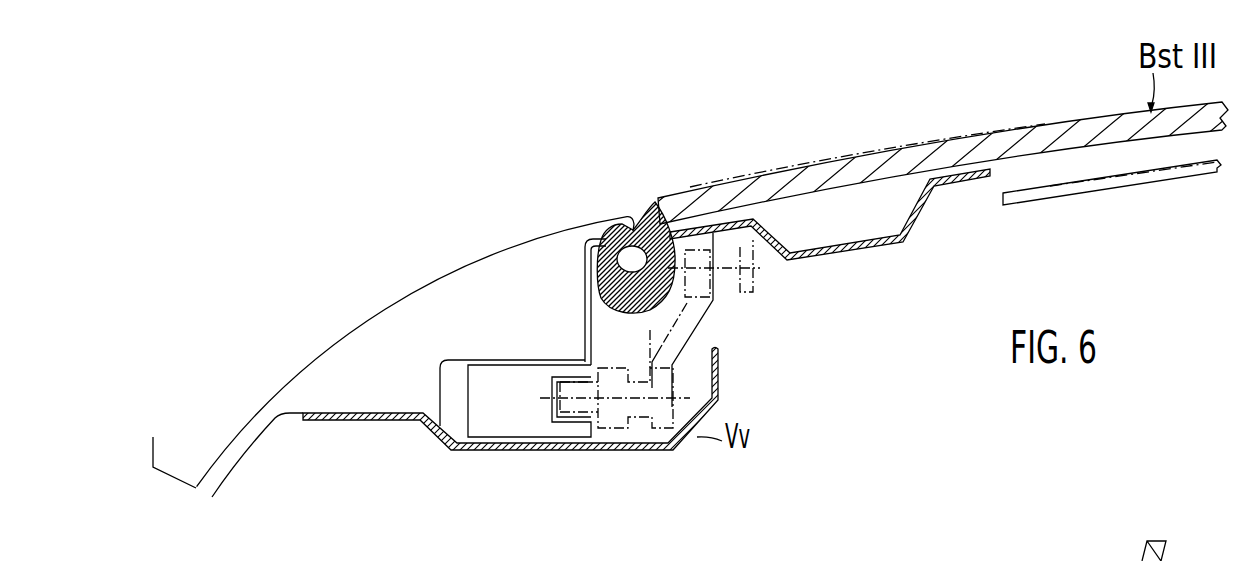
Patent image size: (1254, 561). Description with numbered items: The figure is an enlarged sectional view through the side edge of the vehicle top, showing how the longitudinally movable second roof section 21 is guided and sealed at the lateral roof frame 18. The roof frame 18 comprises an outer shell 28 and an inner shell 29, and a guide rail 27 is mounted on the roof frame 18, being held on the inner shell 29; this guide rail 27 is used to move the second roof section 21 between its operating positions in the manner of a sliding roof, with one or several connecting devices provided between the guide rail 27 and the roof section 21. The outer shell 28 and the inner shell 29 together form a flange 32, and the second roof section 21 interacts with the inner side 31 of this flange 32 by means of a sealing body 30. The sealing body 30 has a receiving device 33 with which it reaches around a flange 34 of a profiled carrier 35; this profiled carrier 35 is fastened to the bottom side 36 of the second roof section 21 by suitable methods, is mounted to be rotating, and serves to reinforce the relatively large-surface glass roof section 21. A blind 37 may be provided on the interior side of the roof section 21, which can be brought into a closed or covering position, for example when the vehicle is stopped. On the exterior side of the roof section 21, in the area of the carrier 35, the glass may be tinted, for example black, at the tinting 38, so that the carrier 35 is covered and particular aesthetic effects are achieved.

The roof frame 18 is at (487, 258).
The second roof section 21 is at (1050, 128).
The guide rail 27 is at (533, 425).
The outer shell 28 is at (268, 396).
The inner shell 29 is at (257, 442).
The sealing body 30 is at (673, 203).
The inner side 31 is at (583, 245).
The flange 32 is at (610, 228).
The receiving device 33 is at (624, 312).
The flange 34 is at (676, 287).
The profiled carrier 35 is at (855, 247).
The bottom side 36 is at (754, 232).
The blind 37 is at (1173, 174).
The tinting 38 is at (827, 153).